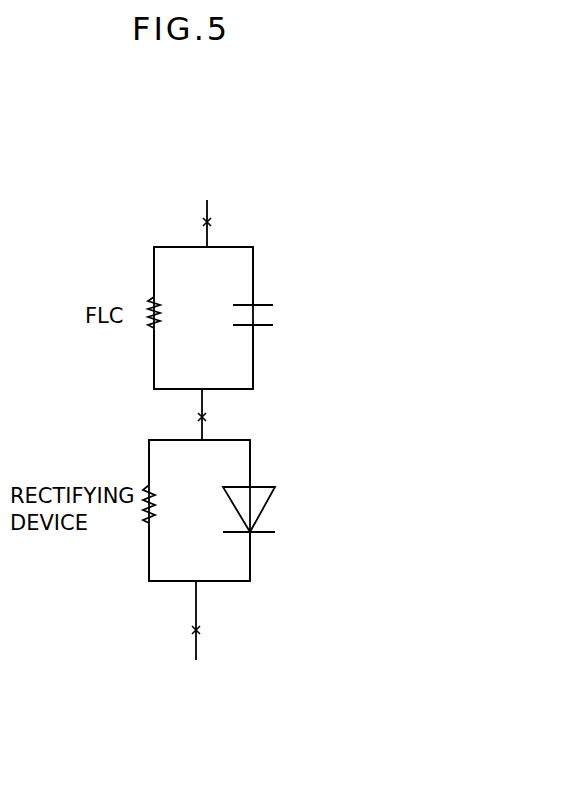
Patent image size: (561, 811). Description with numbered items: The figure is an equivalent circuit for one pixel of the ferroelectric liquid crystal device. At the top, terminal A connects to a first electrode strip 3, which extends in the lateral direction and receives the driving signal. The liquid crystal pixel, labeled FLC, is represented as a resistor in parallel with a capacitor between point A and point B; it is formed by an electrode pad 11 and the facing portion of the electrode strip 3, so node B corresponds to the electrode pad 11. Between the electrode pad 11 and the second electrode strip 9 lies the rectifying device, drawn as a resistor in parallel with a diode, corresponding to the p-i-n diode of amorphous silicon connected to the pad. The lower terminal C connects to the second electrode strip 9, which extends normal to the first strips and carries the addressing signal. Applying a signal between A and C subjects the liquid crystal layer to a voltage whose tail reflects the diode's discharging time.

The first electrode strips 3 is at (207, 200).
The electrode pads 11 is at (192, 416).
The second electrode strips 9 is at (196, 650).